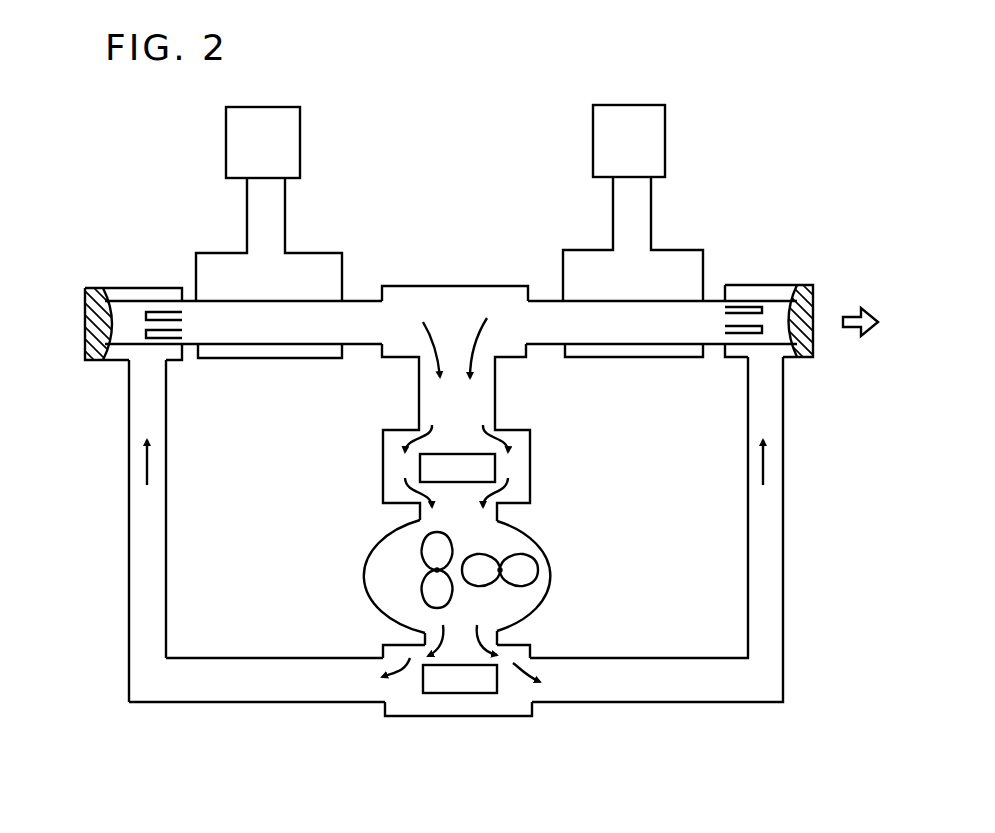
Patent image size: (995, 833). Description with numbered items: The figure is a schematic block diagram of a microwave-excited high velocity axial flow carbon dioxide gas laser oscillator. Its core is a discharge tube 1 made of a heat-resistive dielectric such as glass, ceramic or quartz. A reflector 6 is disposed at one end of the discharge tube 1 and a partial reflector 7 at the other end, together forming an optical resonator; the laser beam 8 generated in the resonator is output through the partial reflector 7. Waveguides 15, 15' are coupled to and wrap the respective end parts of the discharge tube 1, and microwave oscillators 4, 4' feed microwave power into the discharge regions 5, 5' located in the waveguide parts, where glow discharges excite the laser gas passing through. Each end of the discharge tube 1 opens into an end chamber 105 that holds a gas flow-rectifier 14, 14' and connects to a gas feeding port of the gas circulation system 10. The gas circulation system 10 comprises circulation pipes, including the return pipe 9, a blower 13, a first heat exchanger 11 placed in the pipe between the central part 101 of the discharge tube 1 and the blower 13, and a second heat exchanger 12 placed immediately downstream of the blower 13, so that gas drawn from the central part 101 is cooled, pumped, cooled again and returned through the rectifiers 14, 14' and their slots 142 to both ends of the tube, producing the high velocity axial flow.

The discharge tube 1 is at (193, 350).
The central part of the discharge tube 101 is at (451, 296).
The end chamber 105 is at (112, 290).
The reflector 6 is at (88, 335).
The gas flow-rectifier 14 is at (139, 265).
The slots 142 is at (162, 312).
The waveguide 15 is at (276, 268).
The microwave oscillator 4 is at (288, 135).
The discharge region 5 is at (269, 262).
The waveguide 15' is at (621, 267).
The microwave oscillator 4' is at (660, 133).
The discharge region 5' is at (633, 358).
The partial reflector 7 is at (800, 285).
The gas flow-rectifier 14' is at (750, 278).
The laser beam 8 is at (845, 337).
The left return pipe 9 is at (147, 466).
The gas circulation system 10 is at (670, 703).
The first heat exchanger 11 is at (533, 479).
The blower 13 is at (553, 581).
The second heat exchanger 12 is at (503, 717).